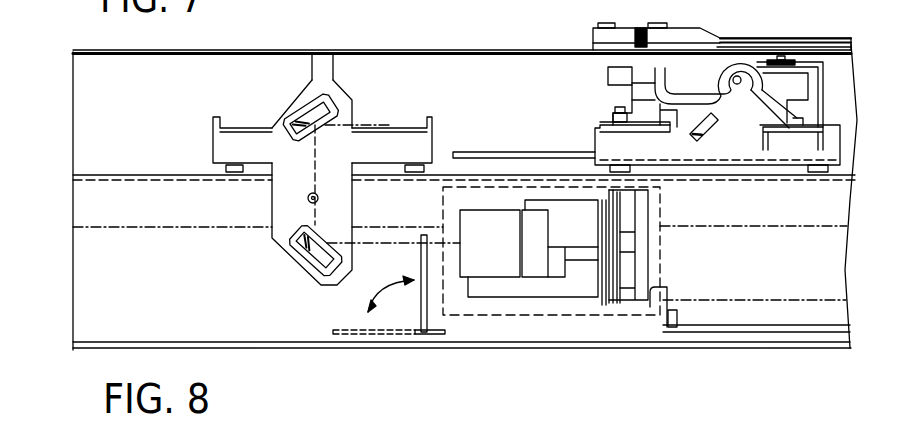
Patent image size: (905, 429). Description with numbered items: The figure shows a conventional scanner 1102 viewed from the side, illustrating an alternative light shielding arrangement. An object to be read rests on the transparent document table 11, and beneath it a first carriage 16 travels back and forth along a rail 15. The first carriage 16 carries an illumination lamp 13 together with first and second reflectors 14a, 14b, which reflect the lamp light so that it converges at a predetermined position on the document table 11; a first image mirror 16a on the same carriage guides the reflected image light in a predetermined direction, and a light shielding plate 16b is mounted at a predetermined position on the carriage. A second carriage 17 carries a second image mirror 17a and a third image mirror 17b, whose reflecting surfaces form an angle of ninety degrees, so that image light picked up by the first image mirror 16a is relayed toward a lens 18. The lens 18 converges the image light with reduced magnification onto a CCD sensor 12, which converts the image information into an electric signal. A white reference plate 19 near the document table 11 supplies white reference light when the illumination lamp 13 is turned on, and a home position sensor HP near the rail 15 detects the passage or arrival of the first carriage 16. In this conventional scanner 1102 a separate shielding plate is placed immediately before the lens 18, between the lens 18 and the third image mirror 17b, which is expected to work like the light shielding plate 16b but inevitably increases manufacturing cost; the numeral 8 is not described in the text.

The printer 8 is at (791, 40).
The document table 11 is at (815, 47).
The CCD sensor 12 is at (643, 297).
The illumination lamp 13 is at (737, 75).
The first reflector 14a is at (750, 113).
The second reflector 14b is at (667, 82).
The rail 15 is at (226, 218).
The first carriage 16 is at (831, 137).
The first image mirror 16a is at (687, 137).
The light shielding plate 16b is at (519, 146).
The second carriage 17 is at (343, 103).
The second image mirror 17a is at (298, 111).
The third image mirror 17b is at (311, 260).
The lens 18 is at (507, 270).
The white reference plate 19 is at (595, 58).
The conventional scanner 1102 is at (474, 47).
The home position sensor HP is at (326, 50).